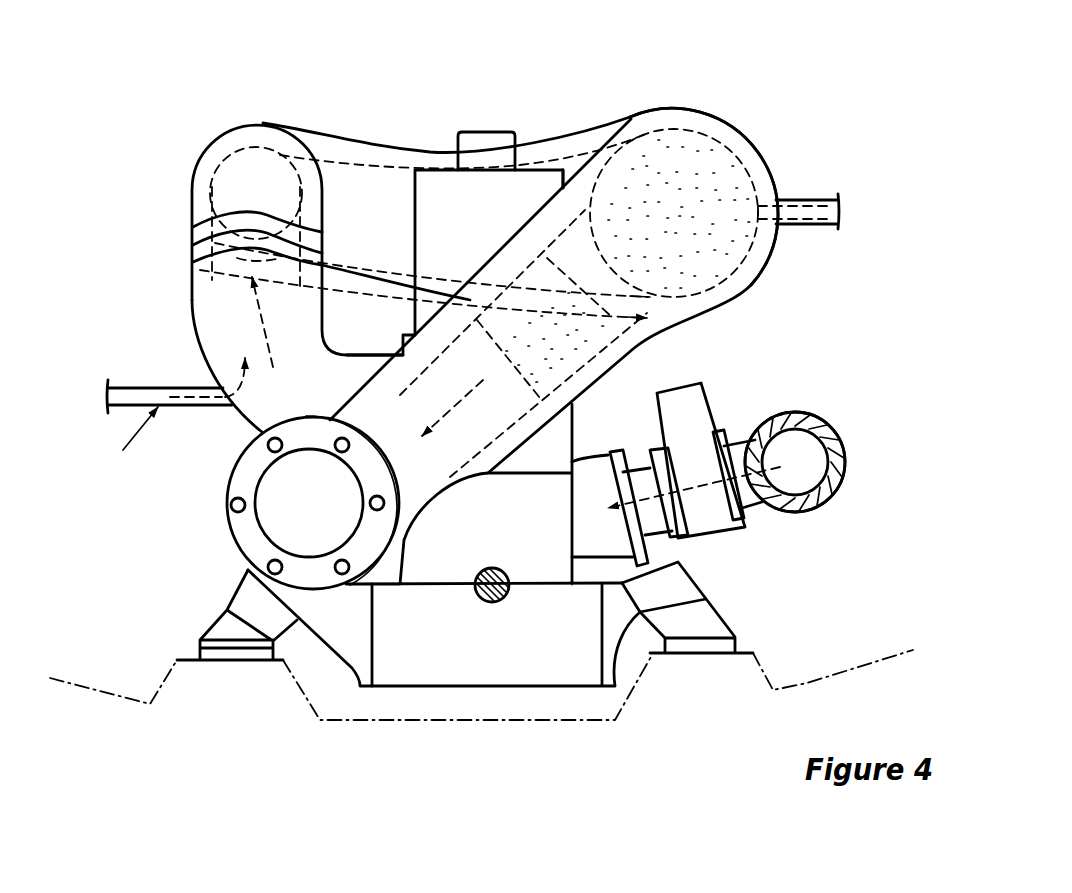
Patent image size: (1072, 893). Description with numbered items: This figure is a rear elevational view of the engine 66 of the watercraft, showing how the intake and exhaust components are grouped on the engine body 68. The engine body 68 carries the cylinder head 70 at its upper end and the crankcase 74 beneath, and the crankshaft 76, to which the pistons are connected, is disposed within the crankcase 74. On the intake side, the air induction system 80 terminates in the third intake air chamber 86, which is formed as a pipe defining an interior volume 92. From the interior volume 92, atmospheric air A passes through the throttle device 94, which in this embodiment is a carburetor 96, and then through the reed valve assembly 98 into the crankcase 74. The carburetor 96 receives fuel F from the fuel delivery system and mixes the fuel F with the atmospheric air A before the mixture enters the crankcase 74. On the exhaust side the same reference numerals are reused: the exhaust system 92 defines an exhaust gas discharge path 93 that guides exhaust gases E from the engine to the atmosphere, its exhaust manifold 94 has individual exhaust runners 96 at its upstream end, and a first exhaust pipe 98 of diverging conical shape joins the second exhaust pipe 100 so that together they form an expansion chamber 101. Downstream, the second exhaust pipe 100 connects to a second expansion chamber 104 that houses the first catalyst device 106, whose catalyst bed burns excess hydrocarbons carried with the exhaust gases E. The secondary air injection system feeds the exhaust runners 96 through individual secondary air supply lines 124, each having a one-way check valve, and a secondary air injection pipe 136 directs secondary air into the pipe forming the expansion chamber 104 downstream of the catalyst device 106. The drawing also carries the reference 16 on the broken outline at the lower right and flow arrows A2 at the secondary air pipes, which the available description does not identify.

The frame 16 is at (890, 658).
The engine 66 is at (943, 270).
The engine body 68 is at (436, 166).
The cylinder head 70 is at (531, 183).
The crankcase 74 is at (455, 657).
The crankshaft 76 is at (502, 603).
The air induction system 80 is at (853, 407).
The third intake air chamber 86 is at (845, 455).
The interior volume 92 is at (154, 165).
The exhaust gas discharge path 93 is at (235, 188).
The throttle device 94 is at (246, 426).
The carburetor 96 is at (354, 368).
The reed valve assembly 98 is at (598, 548).
The second exhaust pipe 100 is at (304, 126).
The expansion chamber 101 is at (575, 143).
The second expansion chamber 104 is at (752, 142).
The first catalyst device 106 is at (713, 158).
The secondary air supply lines 124 is at (128, 397).
The secondary air injection pipe 136 is at (803, 213).
The flow direction A2 is at (848, 212).
The exhaust gases E is at (262, 333).
The atmospheric air A is at (767, 467).
The fuel F is at (711, 538).